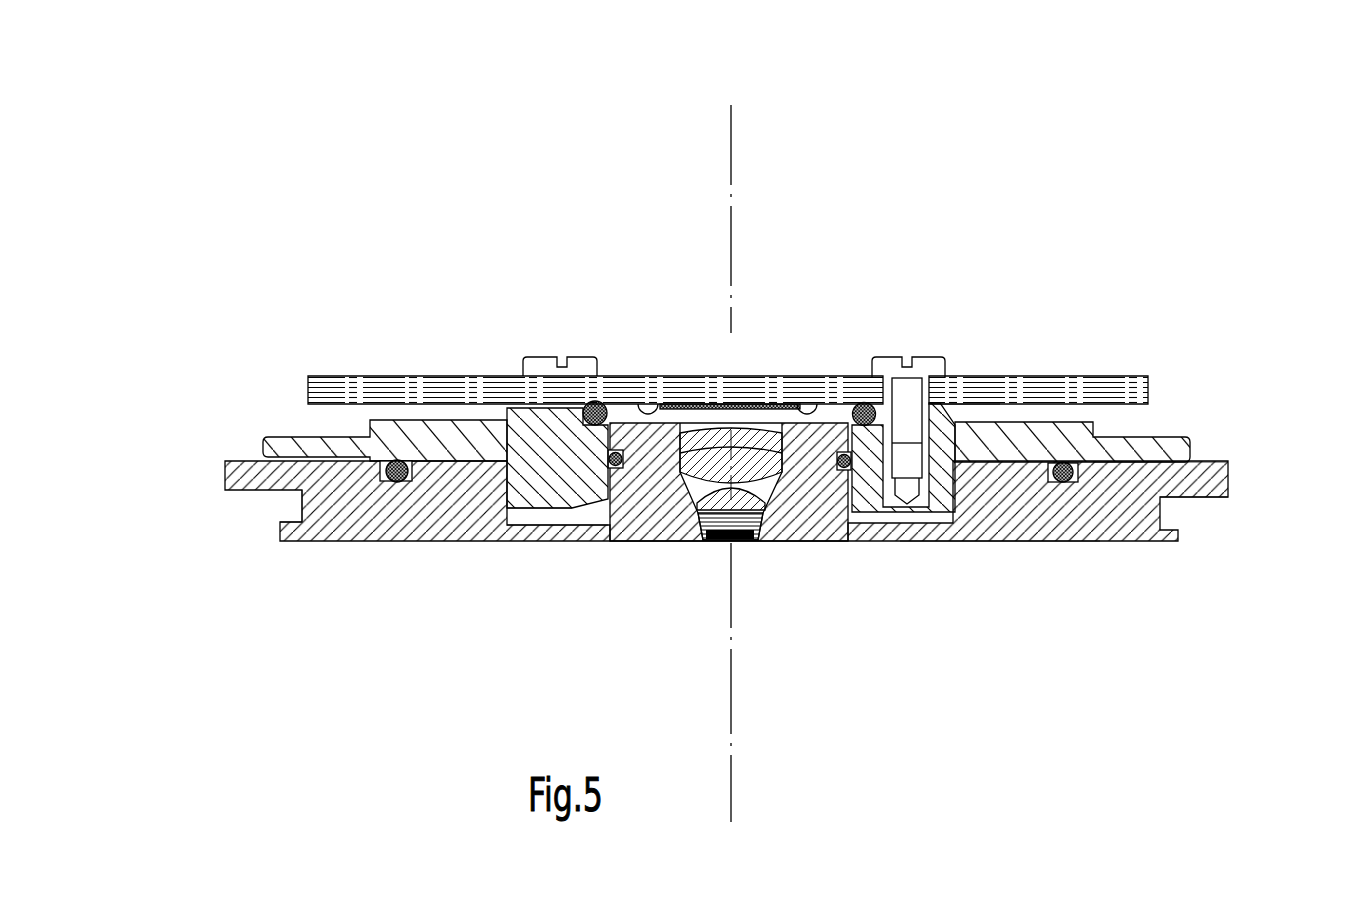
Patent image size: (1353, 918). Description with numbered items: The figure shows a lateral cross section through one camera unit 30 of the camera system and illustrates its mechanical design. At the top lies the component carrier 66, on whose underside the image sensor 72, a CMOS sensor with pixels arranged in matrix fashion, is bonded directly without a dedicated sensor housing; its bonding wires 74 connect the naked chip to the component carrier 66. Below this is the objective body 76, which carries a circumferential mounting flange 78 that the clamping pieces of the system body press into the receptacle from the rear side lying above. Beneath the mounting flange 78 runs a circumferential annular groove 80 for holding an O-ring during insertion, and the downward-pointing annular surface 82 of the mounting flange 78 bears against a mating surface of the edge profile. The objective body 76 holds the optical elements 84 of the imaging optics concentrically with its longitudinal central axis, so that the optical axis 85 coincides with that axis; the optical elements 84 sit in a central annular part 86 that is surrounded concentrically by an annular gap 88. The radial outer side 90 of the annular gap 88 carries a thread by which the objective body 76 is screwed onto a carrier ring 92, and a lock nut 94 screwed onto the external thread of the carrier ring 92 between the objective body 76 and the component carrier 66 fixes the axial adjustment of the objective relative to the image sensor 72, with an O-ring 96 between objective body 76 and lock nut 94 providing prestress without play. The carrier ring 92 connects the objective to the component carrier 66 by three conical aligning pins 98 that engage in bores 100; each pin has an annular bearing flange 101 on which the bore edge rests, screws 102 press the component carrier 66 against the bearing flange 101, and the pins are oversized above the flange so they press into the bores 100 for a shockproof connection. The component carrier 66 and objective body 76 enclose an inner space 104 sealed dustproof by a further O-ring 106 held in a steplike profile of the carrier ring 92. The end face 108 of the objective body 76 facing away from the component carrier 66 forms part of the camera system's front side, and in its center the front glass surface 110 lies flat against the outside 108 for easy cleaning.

The camera unit 30 is at (1144, 231).
The component carrier 66 is at (373, 376).
The image sensor 72 is at (729, 405).
The bonding wires 74 is at (617, 404).
The objective body 76 is at (1088, 525).
The mounting flange 78 is at (1228, 473).
The annular groove 80 is at (282, 511).
The annular surface 82 is at (1200, 498).
The optical elements 84 is at (697, 520).
The optical axis 85 is at (732, 787).
The central annular part 86 is at (803, 506).
The annular gap 88 is at (590, 515).
The radial outer side 90 is at (525, 520).
The carrier ring 92 is at (553, 490).
The lock nut 94 is at (315, 448).
The O-ring 96 is at (398, 480).
The conical aligning pins 98 is at (955, 423).
The bores 100 is at (863, 403).
The bearing flange 101 is at (930, 402).
The screws 102 is at (540, 356).
The inner space 104 is at (716, 418).
The O-ring 106 is at (598, 402).
The end face 108 is at (987, 542).
The front glass surface 110 is at (732, 543).